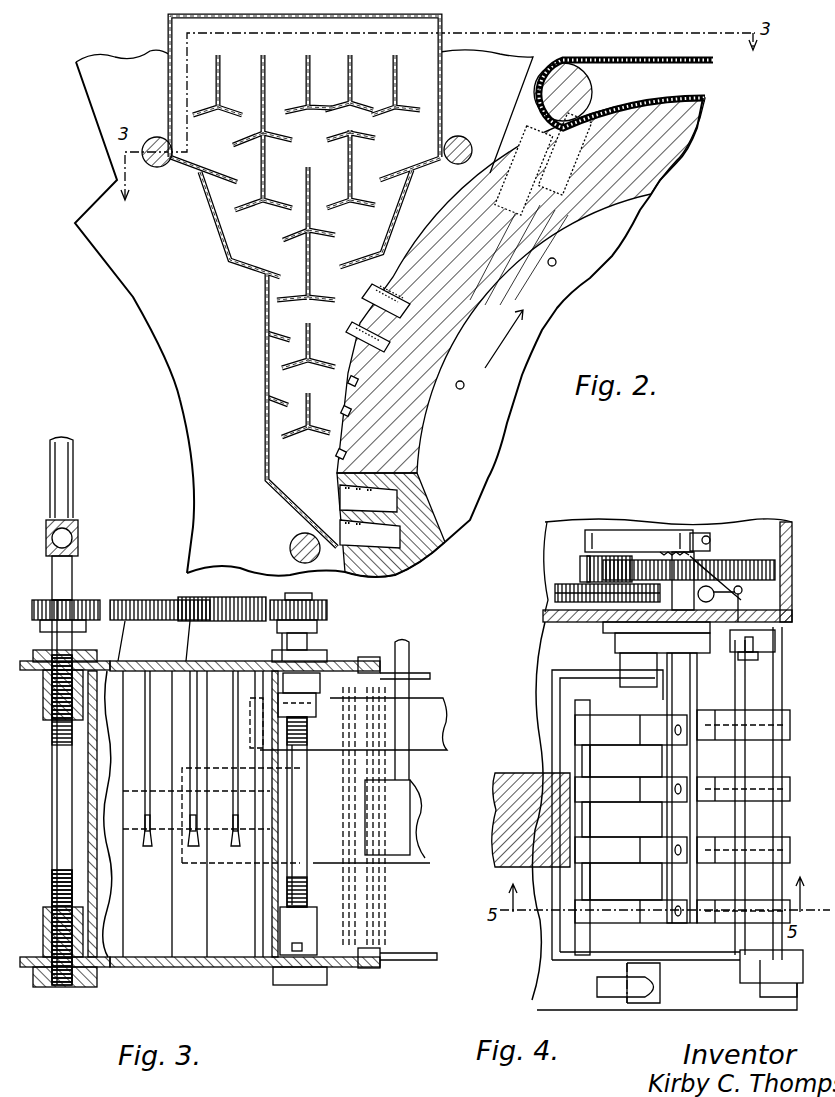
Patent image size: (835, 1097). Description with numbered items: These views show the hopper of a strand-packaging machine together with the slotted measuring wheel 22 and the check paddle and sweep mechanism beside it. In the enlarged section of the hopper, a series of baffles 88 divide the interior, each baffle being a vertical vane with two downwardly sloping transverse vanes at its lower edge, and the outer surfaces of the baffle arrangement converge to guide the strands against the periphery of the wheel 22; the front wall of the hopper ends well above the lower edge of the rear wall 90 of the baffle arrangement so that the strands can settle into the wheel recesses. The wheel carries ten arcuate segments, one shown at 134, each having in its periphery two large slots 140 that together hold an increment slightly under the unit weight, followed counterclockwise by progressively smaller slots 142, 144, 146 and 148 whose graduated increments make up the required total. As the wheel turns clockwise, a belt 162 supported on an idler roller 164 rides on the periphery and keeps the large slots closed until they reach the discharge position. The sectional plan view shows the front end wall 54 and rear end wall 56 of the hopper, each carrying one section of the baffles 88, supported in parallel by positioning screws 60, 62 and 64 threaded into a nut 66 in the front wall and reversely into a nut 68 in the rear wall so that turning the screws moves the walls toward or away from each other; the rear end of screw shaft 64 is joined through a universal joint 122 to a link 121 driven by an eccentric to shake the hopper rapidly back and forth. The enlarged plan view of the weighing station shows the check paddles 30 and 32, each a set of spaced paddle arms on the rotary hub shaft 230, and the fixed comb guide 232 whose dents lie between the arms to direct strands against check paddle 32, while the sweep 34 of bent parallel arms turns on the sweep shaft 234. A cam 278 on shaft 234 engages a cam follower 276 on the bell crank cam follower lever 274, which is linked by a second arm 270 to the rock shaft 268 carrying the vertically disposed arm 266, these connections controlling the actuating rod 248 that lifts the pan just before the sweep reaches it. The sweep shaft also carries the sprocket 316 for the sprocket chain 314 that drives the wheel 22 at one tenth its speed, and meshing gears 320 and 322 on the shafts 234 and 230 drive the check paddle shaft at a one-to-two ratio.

In FIG. 2, the wheel 22 is at (504, 451).
In FIG. 3, the wheel 22 is at (418, 863).
In FIG. 2, the positioning screw 60 is at (290, 548).
In FIG. 2, the positioning screw 62 is at (463, 137).
In FIG. 3, the positioning screw 62 is at (298, 820).
In FIG. 2, the positioning screw 64 is at (161, 168).
In FIG. 3, the positioning screw 64 is at (55, 806).
In FIG. 2, the baffle 88 is at (308, 80).
In FIG. 2, the rear wall of the baffle arrangement 90 is at (228, 256).
In FIG. 2, the arcuate segment 134 is at (647, 187).
In FIG. 2, the large slot 140 is at (386, 292).
In FIG. 2, the small increment slot 142 is at (368, 343).
In FIG. 2, the small increment slot 144 is at (351, 384).
In FIG. 2, the small increment slot 146 is at (351, 417).
In FIG. 2, the small increment slot 148 is at (341, 457).
In FIG. 2, the belt 162 is at (694, 91).
In FIG. 3, the belt 162 is at (400, 822).
In FIG. 2, the idler roller 164 is at (592, 90).
In FIG. 3, the link 121 is at (63, 472).
In FIG. 3, the universal joint 122 is at (82, 532).
In FIG. 3, the rear end wall 56 is at (133, 660).
In FIG. 3, the nut 68 is at (53, 700).
In FIG. 3, the nut 66 is at (47, 908).
In FIG. 3, the front end wall 54 is at (183, 967).
In FIG. 4, the check paddle 30 is at (793, 720).
In FIG. 4, the check paddle 32 is at (580, 728).
In FIG. 4, the sweep 34 is at (743, 738).
In FIG. 4, the rotary hub shaft 230 is at (687, 552).
In FIG. 4, the fixed guide 232 is at (597, 690).
In FIG. 4, the rotary sweep shaft 234 is at (623, 663).
In FIG. 4, the actuating rod 248 is at (783, 827).
In FIG. 4, the vertically disposed arm 266 is at (780, 634).
In FIG. 4, the rock shaft 268 is at (747, 640).
In FIG. 4, the second arm 270 is at (738, 597).
In FIG. 4, the bell crank cam follower lever 274 is at (713, 562).
In FIG. 4, the cam follower 276 is at (704, 533).
In FIG. 4, the cam 278 is at (647, 540).
In FIG. 4, the sprocket chain 314 is at (557, 593).
In FIG. 4, the sprocket 316 is at (615, 603).
In FIG. 4, the gear 320 is at (580, 556).
In FIG. 4, the gear 322 is at (620, 556).